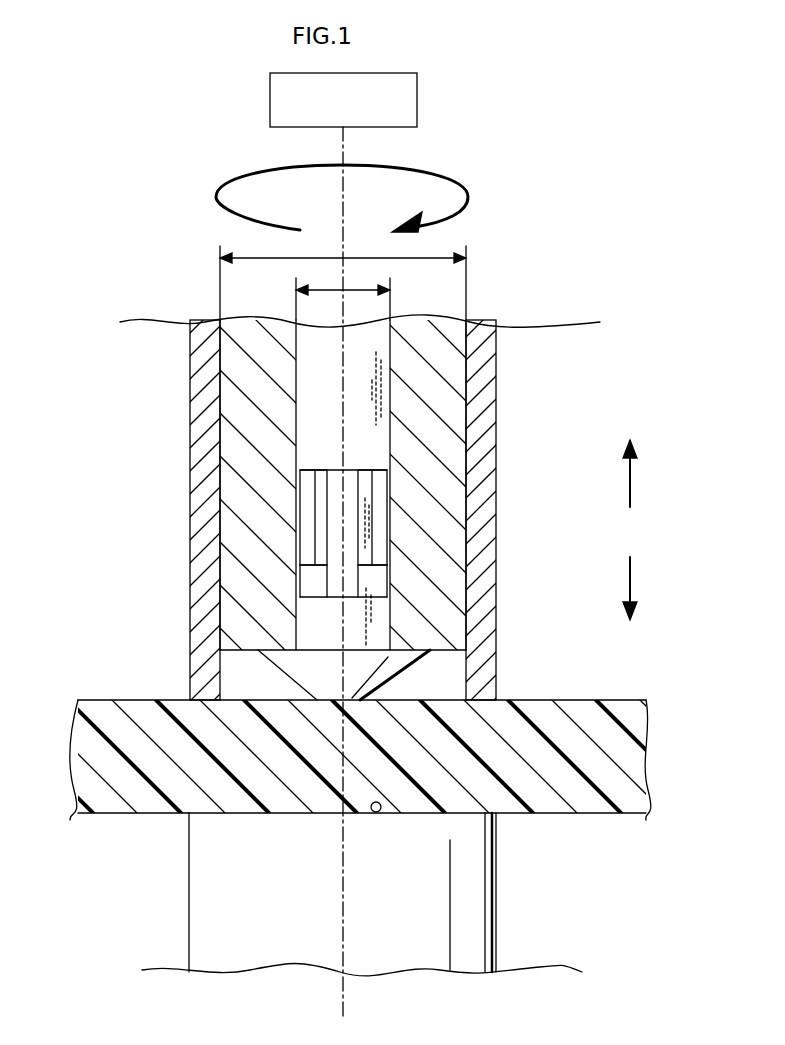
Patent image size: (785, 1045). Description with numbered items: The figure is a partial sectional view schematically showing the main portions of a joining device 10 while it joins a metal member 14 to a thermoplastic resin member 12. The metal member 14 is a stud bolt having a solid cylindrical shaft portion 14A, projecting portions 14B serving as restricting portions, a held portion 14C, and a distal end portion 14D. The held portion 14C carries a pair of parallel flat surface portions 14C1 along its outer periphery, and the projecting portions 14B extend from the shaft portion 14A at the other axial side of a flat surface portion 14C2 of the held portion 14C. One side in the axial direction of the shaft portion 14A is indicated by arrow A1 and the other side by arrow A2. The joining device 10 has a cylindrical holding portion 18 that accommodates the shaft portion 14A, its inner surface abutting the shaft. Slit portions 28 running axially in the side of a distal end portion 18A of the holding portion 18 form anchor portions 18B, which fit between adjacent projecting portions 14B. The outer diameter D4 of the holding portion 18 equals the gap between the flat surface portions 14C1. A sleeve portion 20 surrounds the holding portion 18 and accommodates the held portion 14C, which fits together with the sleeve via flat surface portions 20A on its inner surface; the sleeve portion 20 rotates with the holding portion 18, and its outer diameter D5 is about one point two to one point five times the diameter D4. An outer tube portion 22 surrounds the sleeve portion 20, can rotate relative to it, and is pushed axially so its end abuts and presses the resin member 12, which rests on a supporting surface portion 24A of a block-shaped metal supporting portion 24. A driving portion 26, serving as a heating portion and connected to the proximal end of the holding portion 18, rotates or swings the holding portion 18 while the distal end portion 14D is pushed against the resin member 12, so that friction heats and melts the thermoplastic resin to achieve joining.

The joining device 10 is at (558, 117).
The thermoplastic resin member 12 is at (625, 700).
The metal member 14 is at (340, 526).
The shaft portion 14A is at (368, 490).
The projecting portions 14B is at (312, 565).
The held portion 14C is at (397, 628).
The flat surface portions 14C1 is at (296, 630).
The flat surface portion 14C2 is at (340, 598).
The distal end portion 14D is at (300, 676).
The holding portion 18 is at (391, 367).
The distal end portion 18A is at (296, 578).
The anchor portions 18B is at (345, 468).
The sleeve portion 20 is at (450, 415).
The flat surface portions 20A is at (296, 344).
The outer tube portion 22 is at (484, 423).
The supporting portion 24 is at (497, 890).
The supporting surface portion 24A is at (380, 812).
The driving portion 26 is at (270, 100).
The slit portions 28 is at (307, 497).
The arrow A1 is at (633, 585).
The arrow A2 is at (633, 475).
The outer diameter D4 is at (327, 292).
The outer diameter D5 is at (358, 256).